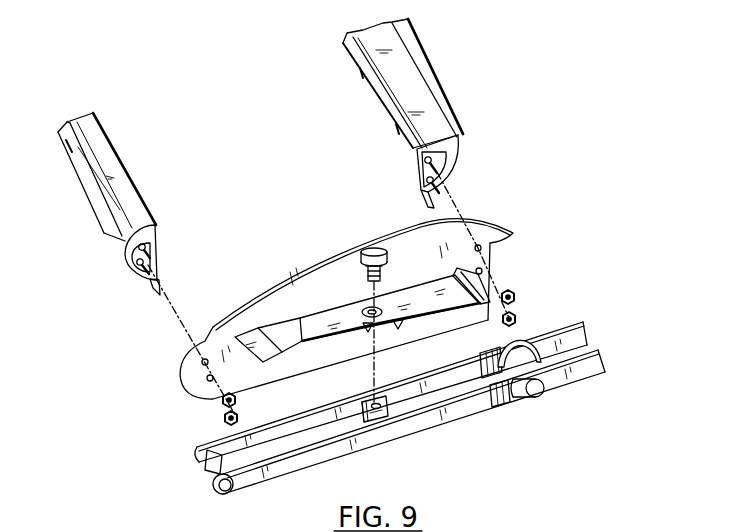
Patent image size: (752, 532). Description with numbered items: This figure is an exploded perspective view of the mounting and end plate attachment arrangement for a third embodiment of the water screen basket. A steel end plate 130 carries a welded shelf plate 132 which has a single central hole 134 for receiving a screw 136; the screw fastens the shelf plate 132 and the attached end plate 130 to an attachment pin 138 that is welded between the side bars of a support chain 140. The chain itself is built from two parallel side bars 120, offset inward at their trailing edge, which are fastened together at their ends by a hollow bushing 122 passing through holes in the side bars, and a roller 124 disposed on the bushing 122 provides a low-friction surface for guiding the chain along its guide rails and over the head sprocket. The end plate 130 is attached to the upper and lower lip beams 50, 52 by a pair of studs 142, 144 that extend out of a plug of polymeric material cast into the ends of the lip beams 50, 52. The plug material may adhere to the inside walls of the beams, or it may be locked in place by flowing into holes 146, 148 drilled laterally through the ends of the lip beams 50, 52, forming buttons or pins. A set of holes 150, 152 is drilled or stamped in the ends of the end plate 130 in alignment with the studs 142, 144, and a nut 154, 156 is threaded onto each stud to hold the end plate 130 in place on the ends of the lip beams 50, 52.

The upper lip beam 50 is at (98, 241).
The lower lip beam 52 is at (455, 80).
The side bar 120 is at (320, 440).
The bushing 122 is at (214, 470).
The roller 124 is at (524, 337).
The end plate 130 is at (308, 272).
The shelf plate 132 is at (330, 318).
The central hole 134 is at (384, 307).
The screw 136 is at (374, 246).
The attachment pin 138 is at (384, 400).
The support chain 140 is at (556, 401).
The stud 142 is at (133, 258).
The stud 144 is at (434, 185).
The hole 146 is at (146, 220).
The hole 148 is at (433, 130).
The hole 150 is at (207, 378).
The hole 152 is at (482, 271).
The nut 154 is at (237, 400).
The nut 156 is at (514, 296).